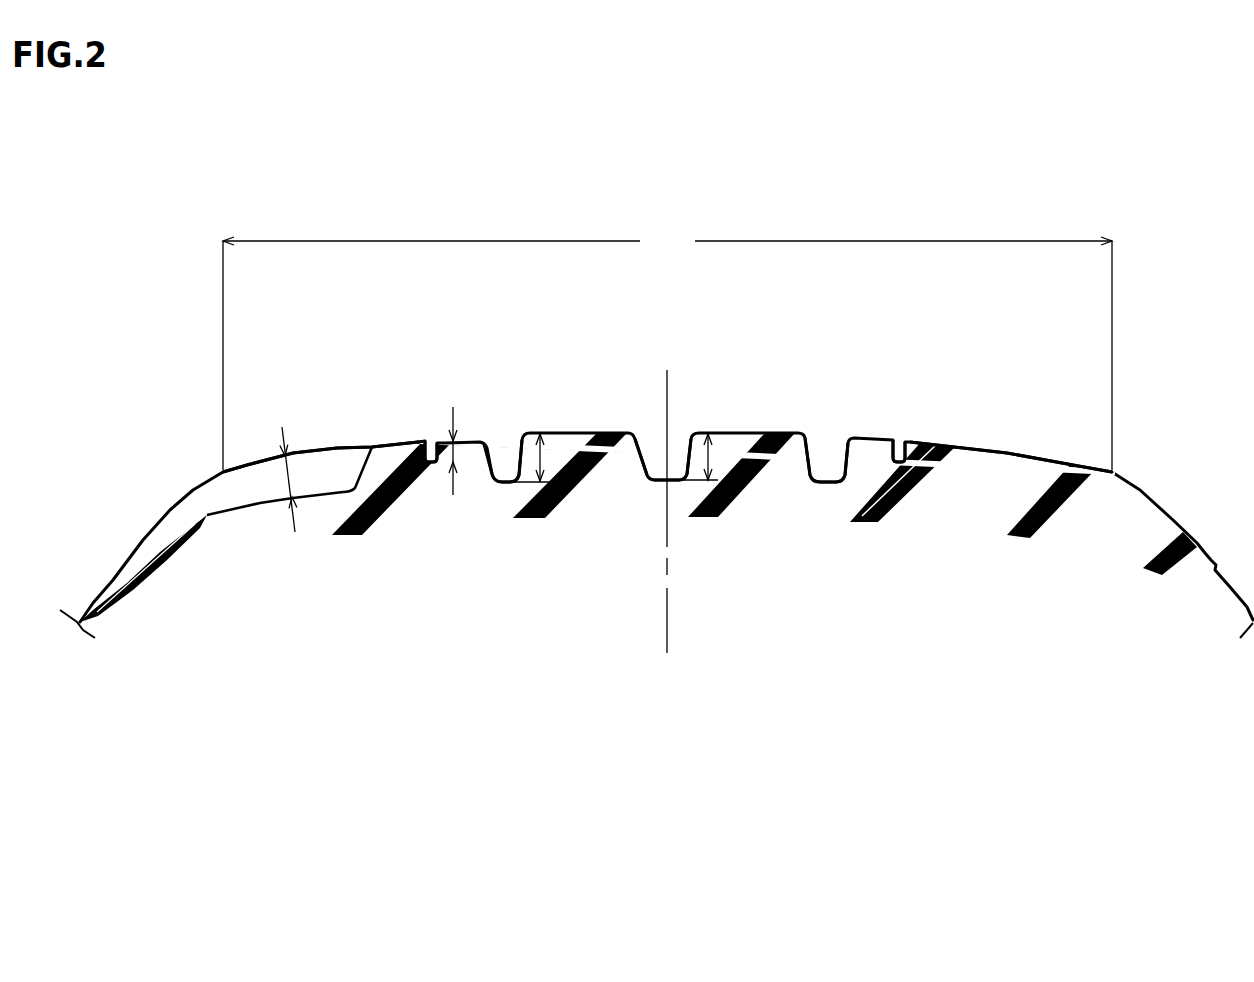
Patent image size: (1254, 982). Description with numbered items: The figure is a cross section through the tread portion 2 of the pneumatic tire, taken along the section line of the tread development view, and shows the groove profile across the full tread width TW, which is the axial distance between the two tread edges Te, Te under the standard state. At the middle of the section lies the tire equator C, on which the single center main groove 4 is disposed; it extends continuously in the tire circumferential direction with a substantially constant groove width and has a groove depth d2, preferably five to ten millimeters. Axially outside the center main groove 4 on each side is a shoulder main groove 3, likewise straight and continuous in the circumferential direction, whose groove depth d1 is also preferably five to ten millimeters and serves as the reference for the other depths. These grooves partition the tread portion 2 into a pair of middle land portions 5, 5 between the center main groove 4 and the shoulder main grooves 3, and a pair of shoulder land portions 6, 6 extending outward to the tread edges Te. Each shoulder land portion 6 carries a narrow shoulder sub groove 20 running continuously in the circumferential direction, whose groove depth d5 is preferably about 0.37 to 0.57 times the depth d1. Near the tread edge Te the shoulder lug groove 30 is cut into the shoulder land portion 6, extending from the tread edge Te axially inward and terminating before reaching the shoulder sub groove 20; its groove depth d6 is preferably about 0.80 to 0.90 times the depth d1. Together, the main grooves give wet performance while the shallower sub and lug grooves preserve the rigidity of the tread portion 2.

The tread portion 2 is at (942, 418).
The shoulder main groove 3 is at (507, 448).
The center main groove 4 is at (658, 448).
The middle land portion 5 is at (592, 432).
The shoulder land portion 6 is at (388, 440).
The shoulder sub groove 20 is at (428, 448).
The shoulder lug groove 30 is at (334, 473).
The tread width TW is at (667, 350).
The tread edge Te is at (223, 472).
The tire equator C is at (666, 498).
The groove depth of the shoulder main groove d1 is at (549, 456).
The groove depth of the center main groove d2 is at (712, 455).
The groove depth of the shoulder sub groove d5 is at (455, 450).
The groove depth of the shoulder lug groove d6 is at (283, 481).